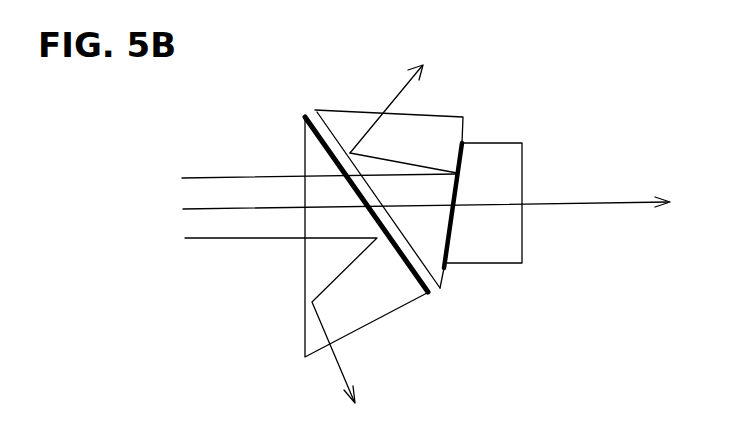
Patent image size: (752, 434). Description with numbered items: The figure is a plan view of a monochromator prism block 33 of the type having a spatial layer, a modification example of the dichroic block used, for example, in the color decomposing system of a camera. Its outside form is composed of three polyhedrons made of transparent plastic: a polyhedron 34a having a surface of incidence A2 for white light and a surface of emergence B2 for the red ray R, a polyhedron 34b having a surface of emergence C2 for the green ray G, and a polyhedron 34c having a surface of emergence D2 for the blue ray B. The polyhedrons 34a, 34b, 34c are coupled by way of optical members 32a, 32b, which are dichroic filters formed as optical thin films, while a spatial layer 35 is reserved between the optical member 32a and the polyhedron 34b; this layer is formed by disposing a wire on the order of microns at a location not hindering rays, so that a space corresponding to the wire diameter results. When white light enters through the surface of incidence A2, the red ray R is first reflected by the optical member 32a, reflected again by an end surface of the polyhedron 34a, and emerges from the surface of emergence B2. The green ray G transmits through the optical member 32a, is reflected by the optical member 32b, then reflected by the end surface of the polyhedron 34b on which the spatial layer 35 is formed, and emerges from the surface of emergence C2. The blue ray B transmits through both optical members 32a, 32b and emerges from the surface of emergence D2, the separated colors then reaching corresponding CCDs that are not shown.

The optical member 32a is at (307, 116).
The optical member 32b is at (453, 233).
The monochromator prism block 33 is at (620, 326).
The polyhedron 34a is at (303, 145).
The polyhedron 34b is at (343, 128).
The polyhedron 34c is at (495, 158).
The spatial layer 35 is at (316, 118).
The green ray G is at (298, 179).
The blue ray B is at (404, 209).
The red ray R is at (258, 313).
The surface of incidence A2 is at (303, 297).
The surface of emergence B2 is at (378, 323).
The surface of emergence C2 is at (363, 110).
The surface of emergence D2 is at (523, 238).